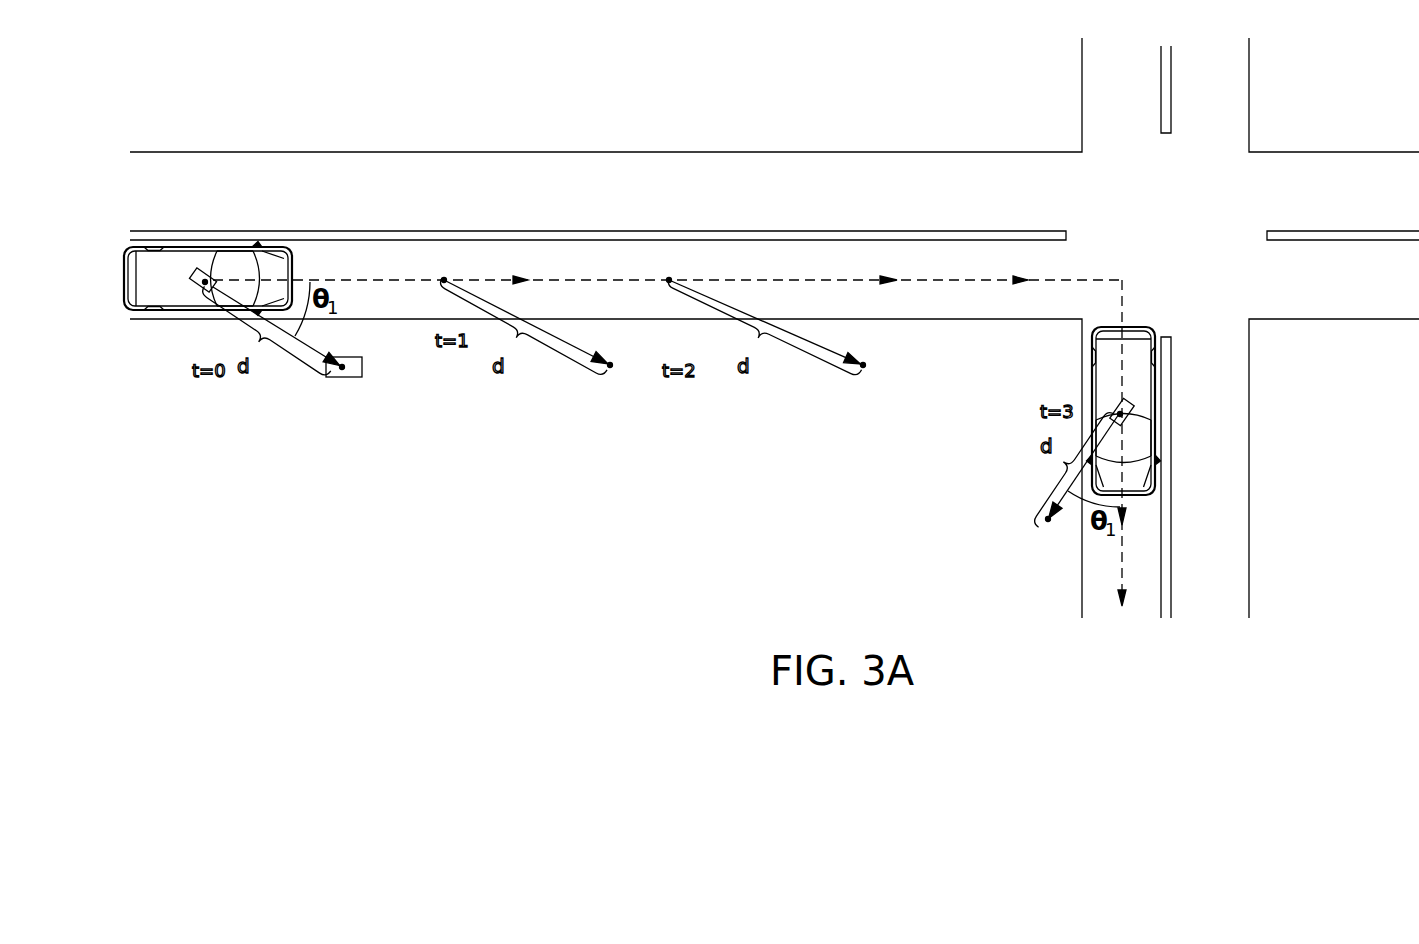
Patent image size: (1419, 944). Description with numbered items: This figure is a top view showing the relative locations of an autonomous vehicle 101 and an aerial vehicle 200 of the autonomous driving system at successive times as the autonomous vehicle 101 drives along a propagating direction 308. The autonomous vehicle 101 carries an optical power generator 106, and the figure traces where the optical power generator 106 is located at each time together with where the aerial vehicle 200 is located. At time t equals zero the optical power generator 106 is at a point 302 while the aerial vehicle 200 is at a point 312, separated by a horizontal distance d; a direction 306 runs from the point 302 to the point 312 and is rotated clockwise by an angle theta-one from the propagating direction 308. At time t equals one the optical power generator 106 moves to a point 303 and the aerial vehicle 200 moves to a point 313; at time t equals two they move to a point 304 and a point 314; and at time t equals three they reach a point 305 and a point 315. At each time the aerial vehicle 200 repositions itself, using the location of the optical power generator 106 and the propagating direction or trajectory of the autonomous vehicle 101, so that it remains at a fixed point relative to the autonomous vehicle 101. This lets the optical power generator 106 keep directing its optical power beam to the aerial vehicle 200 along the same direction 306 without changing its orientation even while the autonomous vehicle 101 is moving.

The autonomous vehicle 101 is at (124, 278).
The optical power generator 106 is at (201, 273).
The aerial vehicle 200 is at (362, 376).
The point 302 is at (192, 277).
The point 303 is at (444, 279).
The point 304 is at (669, 279).
The point 305 is at (1128, 401).
The direction 306 is at (322, 350).
The propagating direction 308 is at (1122, 280).
The point 312 is at (342, 369).
The point 313 is at (611, 367).
The point 314 is at (864, 367).
The point 315 is at (1046, 522).